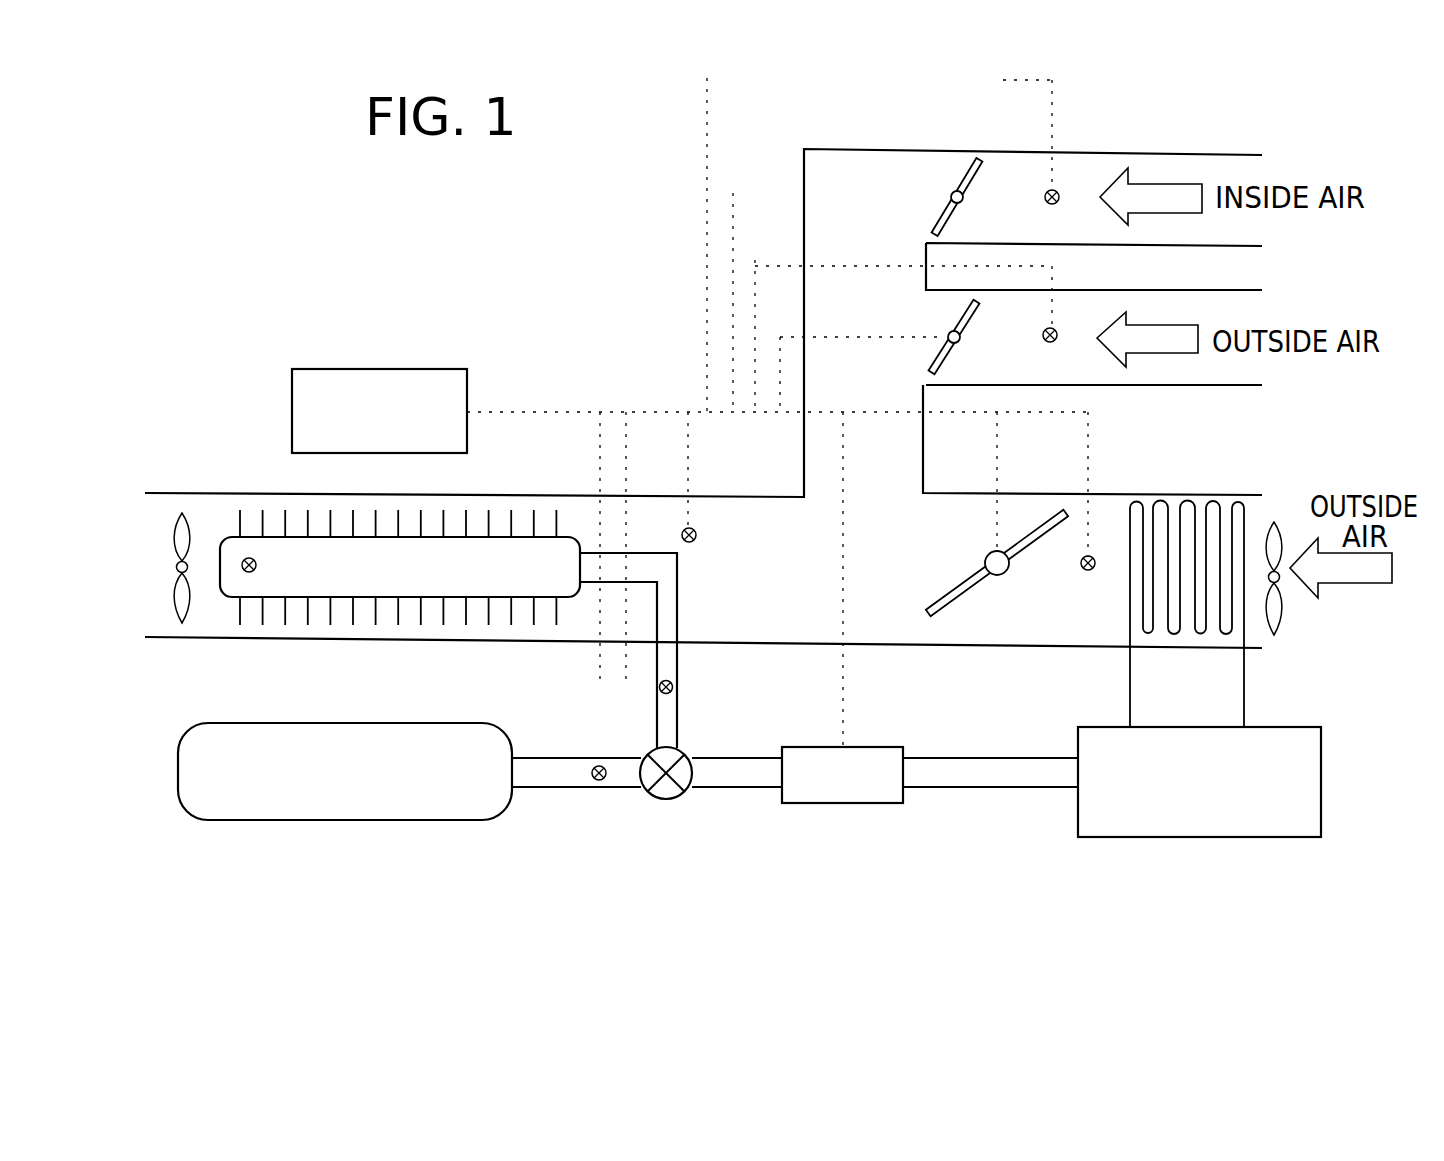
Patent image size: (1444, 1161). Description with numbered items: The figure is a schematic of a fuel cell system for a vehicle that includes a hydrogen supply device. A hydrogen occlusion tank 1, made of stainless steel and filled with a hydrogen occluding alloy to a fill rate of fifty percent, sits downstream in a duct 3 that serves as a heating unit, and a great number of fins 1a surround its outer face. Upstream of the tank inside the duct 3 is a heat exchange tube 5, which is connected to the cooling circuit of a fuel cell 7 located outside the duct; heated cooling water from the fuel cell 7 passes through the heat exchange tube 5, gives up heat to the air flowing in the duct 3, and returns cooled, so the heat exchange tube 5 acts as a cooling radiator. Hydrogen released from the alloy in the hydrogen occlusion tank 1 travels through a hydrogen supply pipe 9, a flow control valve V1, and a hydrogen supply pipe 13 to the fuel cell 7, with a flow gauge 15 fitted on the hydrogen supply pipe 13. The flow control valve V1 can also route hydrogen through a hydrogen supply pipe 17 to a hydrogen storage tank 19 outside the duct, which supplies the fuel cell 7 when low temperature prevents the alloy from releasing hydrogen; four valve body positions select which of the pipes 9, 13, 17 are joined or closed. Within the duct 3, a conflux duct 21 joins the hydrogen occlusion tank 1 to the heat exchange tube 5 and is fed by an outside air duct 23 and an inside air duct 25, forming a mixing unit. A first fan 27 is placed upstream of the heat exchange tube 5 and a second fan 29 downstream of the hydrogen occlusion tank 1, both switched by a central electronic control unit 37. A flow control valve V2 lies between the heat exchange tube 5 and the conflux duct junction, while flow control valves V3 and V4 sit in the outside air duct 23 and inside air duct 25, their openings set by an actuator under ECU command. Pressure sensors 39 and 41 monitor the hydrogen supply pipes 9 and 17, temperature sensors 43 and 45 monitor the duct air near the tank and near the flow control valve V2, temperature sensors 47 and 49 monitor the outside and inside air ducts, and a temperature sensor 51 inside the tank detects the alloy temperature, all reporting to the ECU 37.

The hydrogen occlusion tank 1 is at (343, 603).
The fins 1a is at (400, 612).
The duct 3 is at (789, 648).
The heat exchange tube 5 is at (1172, 500).
The fuel cell 7 is at (1300, 727).
The hydrogen supply pipe 9 is at (662, 650).
The hydrogen supply pipe 13 is at (750, 790).
The flow gauge 15 is at (840, 805).
The hydrogen supply pipe 17 is at (552, 790).
The hydrogen storage tank 19 is at (345, 812).
The conflux duct 21 is at (802, 450).
The outside air duct 23 is at (1248, 291).
The inside air duct 25 is at (1183, 154).
The first fan 27 is at (1282, 530).
The second fan 29 is at (193, 526).
The central electronic control unit 37 is at (379, 369).
The pressure sensor 39 is at (707, 676).
The pressure sensor 41 is at (590, 758).
The temperature sensor 43 is at (700, 534).
The temperature sensor 45 is at (1088, 571).
The temperature sensor 47 is at (1052, 343).
The temperature sensor 49 is at (1054, 205).
The temperature sensor 51 is at (249, 597).
The flow control valve V1 is at (667, 800).
The flow control valve V2 is at (980, 583).
The flow control valve V3 is at (965, 326).
The flow control valve V4 is at (968, 186).